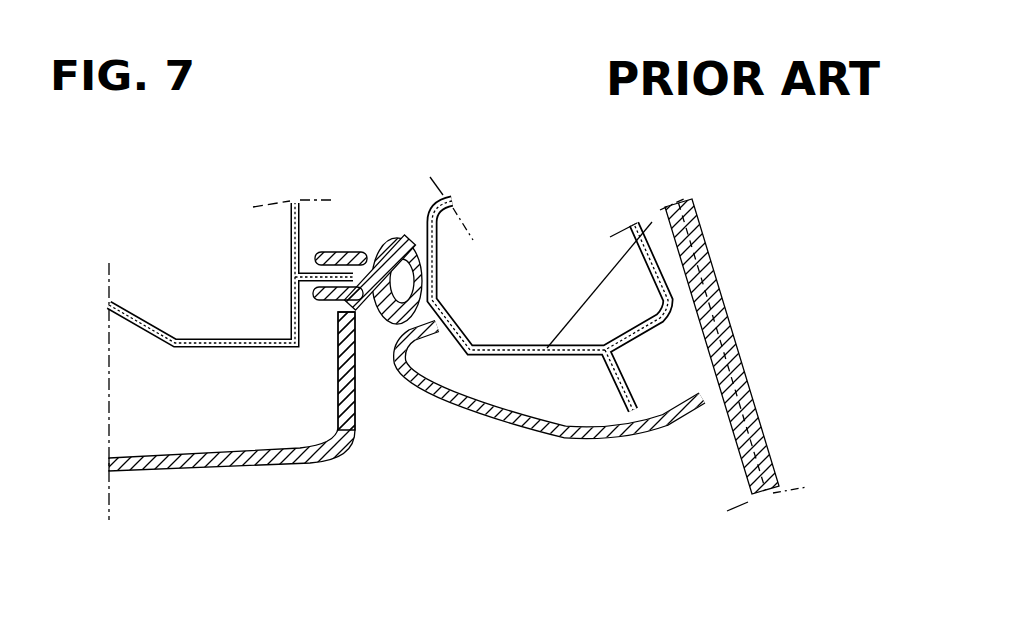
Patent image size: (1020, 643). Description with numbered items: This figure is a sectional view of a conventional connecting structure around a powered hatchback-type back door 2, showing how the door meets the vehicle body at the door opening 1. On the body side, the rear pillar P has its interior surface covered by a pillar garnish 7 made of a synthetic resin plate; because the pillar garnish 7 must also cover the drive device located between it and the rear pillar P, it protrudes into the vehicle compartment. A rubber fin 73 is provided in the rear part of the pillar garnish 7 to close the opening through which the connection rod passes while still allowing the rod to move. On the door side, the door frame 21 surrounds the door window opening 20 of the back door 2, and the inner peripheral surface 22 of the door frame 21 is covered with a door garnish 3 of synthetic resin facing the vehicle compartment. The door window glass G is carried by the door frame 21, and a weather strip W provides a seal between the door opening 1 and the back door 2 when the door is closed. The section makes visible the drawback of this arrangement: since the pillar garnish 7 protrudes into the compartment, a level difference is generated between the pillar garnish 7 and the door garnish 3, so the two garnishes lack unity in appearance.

The door opening 1 is at (293, 362).
The rear pillar P is at (218, 342).
The weather strip W is at (393, 237).
The pillar garnish 7 is at (293, 454).
The rubber fin 73 is at (357, 388).
The door window opening 20 is at (645, 378).
The door garnish 3 is at (563, 437).
The back door 2 is at (660, 286).
The door frame 21 is at (655, 349).
The inner peripheral surface 22 is at (680, 240).
The door window glass G is at (713, 307).